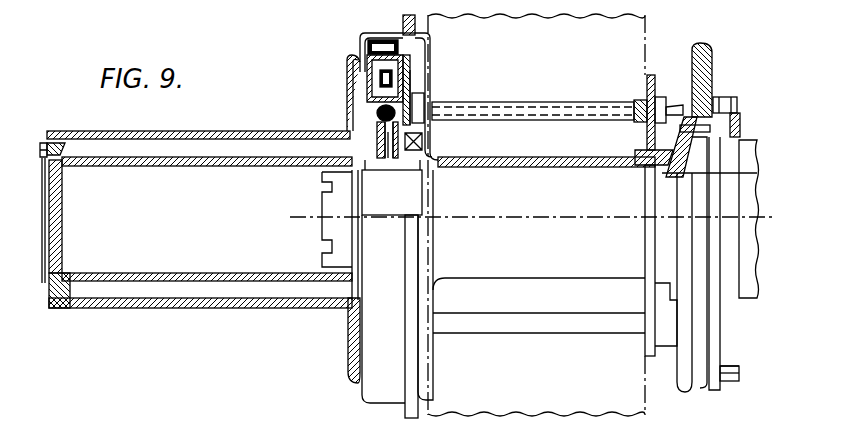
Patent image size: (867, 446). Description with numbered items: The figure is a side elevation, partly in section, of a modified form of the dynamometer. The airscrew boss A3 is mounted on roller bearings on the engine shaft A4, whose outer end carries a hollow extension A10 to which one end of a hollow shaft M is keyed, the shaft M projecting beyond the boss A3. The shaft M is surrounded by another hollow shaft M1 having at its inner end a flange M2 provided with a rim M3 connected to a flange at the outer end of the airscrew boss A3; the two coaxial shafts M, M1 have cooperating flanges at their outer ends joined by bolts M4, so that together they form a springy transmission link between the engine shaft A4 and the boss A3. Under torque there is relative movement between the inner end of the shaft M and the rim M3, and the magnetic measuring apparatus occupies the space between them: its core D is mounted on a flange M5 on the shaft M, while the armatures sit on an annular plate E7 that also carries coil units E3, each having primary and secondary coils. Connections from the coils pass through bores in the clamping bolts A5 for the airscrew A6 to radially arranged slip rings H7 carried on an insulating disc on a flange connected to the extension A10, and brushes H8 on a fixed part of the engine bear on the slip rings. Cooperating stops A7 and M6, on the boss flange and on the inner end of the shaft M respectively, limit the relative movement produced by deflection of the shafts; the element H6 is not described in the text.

The hollow shaft M is at (186, 166).
The hollow shaft M1 is at (213, 131).
The flange M2 is at (352, 89).
The rim M3 is at (387, 31).
The bolts M4 is at (90, 120).
The flange M5 is at (377, 148).
The stop M6 is at (403, 170).
The core D is at (377, 112).
The coil units E3 is at (372, 74).
The annular plate E7 is at (362, 43).
The bracket H6 is at (408, 94).
The slip rings H7 is at (714, 96).
The brushes H8 is at (736, 95).
The airscrew boss A3 is at (577, 160).
The engine shaft A4 is at (690, 193).
The clamping bolts A5 is at (557, 101).
The airscrew A6 is at (627, 51).
The stop A7 is at (427, 139).
The hollow extension A10 is at (757, 176).